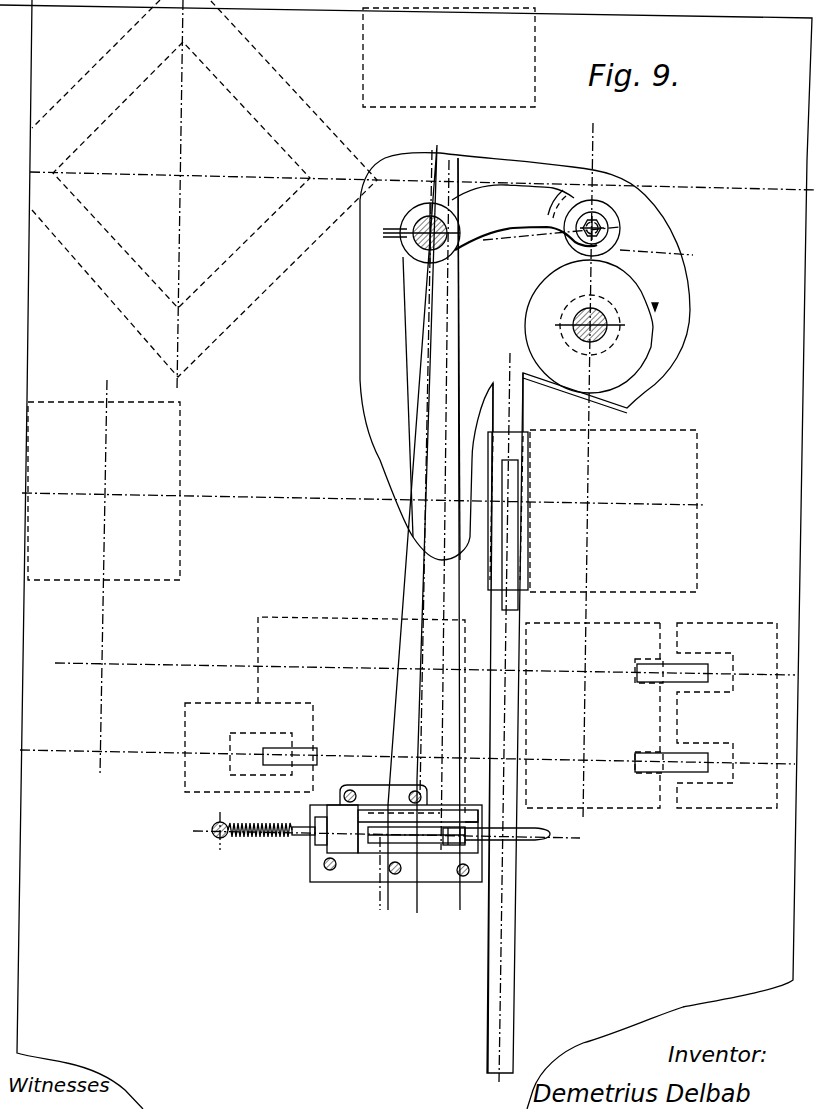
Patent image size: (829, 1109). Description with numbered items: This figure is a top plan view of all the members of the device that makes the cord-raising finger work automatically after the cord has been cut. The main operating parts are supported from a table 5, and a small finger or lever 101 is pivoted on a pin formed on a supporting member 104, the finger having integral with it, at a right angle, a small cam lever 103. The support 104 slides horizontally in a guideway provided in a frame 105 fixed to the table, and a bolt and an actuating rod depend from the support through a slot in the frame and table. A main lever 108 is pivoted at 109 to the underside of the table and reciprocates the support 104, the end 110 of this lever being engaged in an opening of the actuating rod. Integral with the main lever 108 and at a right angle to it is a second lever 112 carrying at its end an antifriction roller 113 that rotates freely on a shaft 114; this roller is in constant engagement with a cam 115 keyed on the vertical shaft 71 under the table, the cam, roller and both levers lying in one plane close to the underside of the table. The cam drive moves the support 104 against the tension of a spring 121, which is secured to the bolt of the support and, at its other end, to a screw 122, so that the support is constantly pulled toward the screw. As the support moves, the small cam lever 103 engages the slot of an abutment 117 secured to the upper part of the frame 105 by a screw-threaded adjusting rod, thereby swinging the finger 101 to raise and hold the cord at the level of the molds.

The table 5 is at (310, 858).
The vertical shaft 71 is at (600, 343).
The finger or lever 101 is at (538, 843).
The cam lever 103 is at (474, 822).
The supporting member 104 is at (477, 855).
The frame 105 is at (327, 875).
The main lever 108 is at (413, 387).
The pivot 109 is at (408, 240).
The end of lever 110 is at (445, 858).
The second lever 112 is at (524, 217).
The antifriction roller 113 is at (622, 233).
The shaft 114 is at (618, 218).
The cam 115 is at (613, 293).
The abutment 117 is at (452, 858).
The spring 121 is at (245, 838).
The screw 122 is at (213, 825).